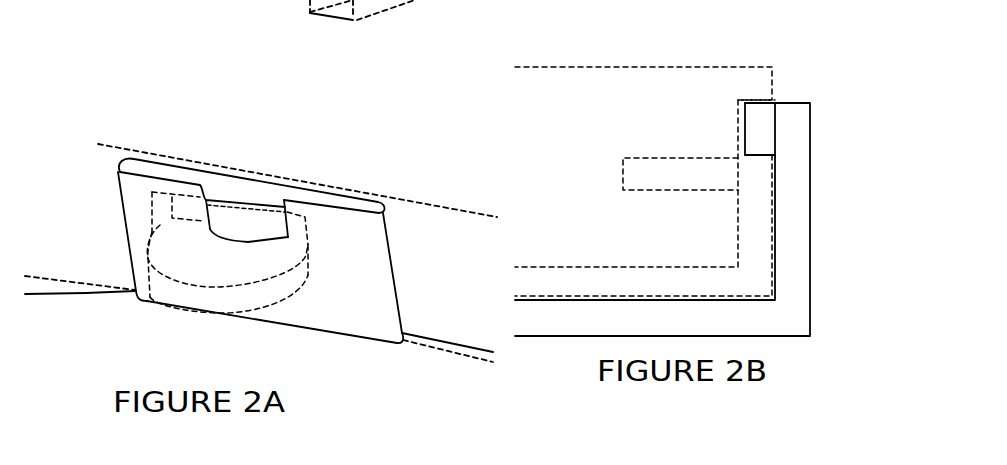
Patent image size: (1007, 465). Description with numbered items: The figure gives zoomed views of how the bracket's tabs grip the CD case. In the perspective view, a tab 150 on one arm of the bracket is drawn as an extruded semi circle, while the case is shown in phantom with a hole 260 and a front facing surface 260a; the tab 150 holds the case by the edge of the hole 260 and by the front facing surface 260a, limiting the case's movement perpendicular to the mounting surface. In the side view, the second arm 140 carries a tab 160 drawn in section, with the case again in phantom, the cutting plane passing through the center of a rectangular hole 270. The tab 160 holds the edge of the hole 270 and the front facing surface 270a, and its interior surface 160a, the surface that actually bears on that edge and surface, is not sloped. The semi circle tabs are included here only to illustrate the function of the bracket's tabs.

In FIG. 2B, the second arm 140 is at (664, 5).
In FIG. 2A, the tab 150 is at (240, 232).
In FIG. 2B, the tab 160 is at (760, 133).
In FIG. 2B, the interior surface of the tab 160a is at (757, 155).
In FIG. 2A, the hole 260 is at (188, 220).
In FIG. 2A, the front facing surface 260a is at (222, 245).
In FIG. 2B, the hole 270 is at (776, 158).
In FIG. 2B, the front facing surface 270a is at (751, 159).